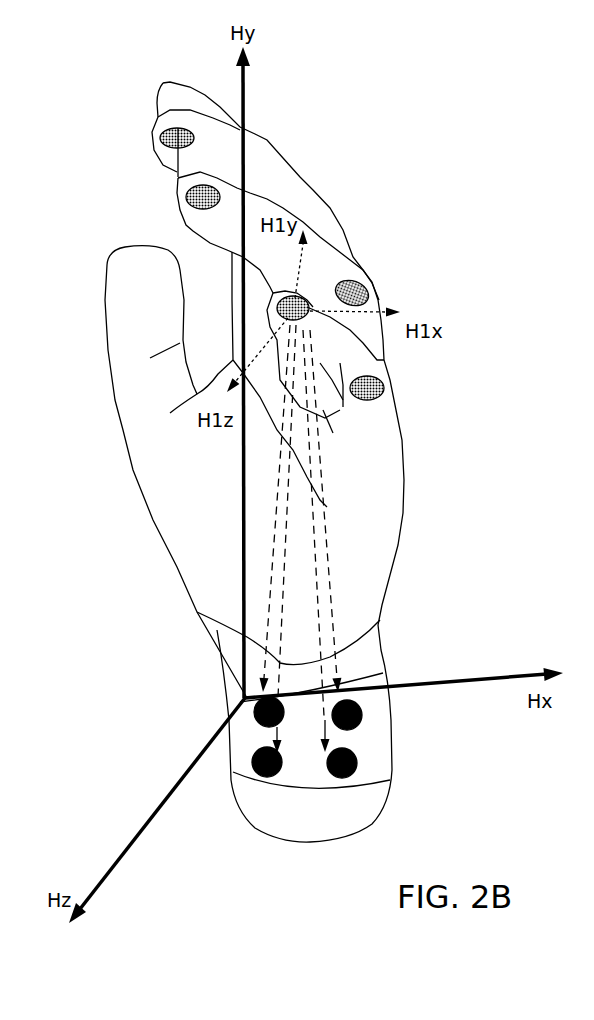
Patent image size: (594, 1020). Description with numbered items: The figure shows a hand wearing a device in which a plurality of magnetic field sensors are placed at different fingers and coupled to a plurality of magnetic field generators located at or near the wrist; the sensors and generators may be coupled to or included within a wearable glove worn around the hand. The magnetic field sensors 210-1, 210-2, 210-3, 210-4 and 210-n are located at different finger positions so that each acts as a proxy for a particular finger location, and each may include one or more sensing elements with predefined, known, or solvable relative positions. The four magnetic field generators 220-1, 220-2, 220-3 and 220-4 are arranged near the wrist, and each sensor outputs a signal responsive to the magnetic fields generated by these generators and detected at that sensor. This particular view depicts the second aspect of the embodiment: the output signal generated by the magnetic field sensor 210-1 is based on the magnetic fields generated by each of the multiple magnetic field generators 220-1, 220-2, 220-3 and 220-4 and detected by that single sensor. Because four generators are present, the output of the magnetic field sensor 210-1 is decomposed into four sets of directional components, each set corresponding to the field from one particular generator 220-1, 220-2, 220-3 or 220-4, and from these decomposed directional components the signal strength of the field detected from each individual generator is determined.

The magnetic field sensor 210-n is at (168, 120).
The magnetic field sensor 210-3 is at (186, 203).
The magnetic field sensor 210-1 is at (270, 303).
The magnetic field sensor 210-4 is at (360, 280).
The magnetic field sensor 210-2 is at (384, 386).
The magnetic field generator 220-1 is at (253, 712).
The magnetic field generator 220-2 is at (251, 760).
The magnetic field generator 220-3 is at (363, 716).
The magnetic field generator 220-4 is at (358, 762).